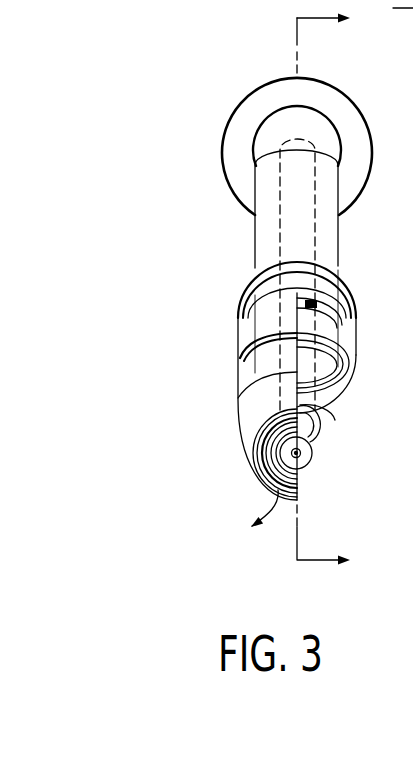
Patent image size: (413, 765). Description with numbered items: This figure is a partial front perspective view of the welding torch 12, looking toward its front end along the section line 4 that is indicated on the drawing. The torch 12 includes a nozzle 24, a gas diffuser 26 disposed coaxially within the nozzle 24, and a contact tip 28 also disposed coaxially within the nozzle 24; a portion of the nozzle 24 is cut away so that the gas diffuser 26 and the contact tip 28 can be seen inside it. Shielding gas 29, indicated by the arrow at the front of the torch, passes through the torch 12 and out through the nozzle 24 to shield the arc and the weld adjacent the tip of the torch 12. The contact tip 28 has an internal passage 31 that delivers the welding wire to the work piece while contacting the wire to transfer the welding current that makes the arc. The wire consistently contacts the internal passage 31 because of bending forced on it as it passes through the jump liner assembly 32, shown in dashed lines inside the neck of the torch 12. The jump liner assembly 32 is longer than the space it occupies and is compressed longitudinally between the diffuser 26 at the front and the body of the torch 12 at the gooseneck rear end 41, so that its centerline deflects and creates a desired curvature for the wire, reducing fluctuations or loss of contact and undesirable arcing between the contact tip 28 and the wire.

The section line 4- 4 is at (323, 298).
The welding torch 12 is at (207, 232).
The nozzle 24 is at (245, 384).
The gas diffuser 26 is at (318, 375).
The contact tip 28 is at (316, 436).
The shielding gas 29 is at (278, 497).
The internal passage 31 is at (302, 456).
The jump liner assembly 32 is at (316, 232).
The gooseneck rear end 41 is at (412, 18).